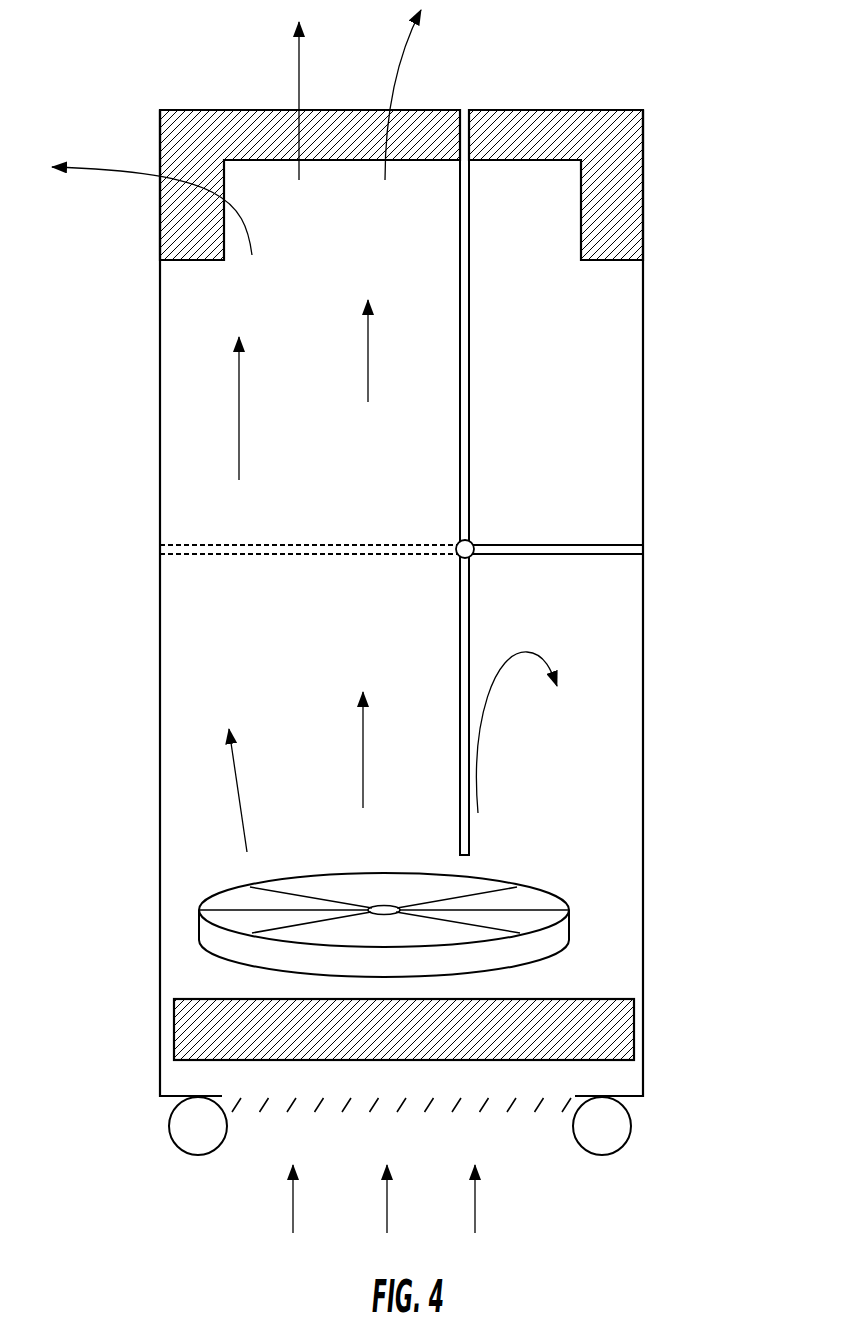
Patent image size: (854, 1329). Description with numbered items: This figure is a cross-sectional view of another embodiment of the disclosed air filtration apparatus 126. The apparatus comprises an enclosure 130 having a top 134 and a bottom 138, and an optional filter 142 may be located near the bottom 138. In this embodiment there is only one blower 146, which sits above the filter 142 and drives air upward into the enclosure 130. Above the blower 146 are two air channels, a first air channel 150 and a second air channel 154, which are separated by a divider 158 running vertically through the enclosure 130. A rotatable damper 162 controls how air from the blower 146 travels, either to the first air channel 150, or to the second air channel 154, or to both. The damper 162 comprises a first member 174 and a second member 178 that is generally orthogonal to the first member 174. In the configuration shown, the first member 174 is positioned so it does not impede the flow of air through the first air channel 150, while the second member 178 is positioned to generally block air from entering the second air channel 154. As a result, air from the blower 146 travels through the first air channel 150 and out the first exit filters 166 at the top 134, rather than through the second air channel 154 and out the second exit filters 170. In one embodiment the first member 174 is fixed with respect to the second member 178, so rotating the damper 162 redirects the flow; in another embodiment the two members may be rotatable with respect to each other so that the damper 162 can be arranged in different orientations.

The air filtration apparatus 126 is at (72, 478).
The enclosure 130 is at (645, 372).
The top 134 is at (540, 122).
The bottom 138 is at (238, 1097).
The filter 142 is at (620, 1030).
The blower 146 is at (572, 927).
The first air channel 150 is at (233, 642).
The second air channel 154 is at (573, 475).
The divider 158 is at (465, 388).
The rotatable damper 162 is at (470, 635).
The first exit filters 166 is at (270, 122).
The second exit filters 170 is at (497, 120).
The first member 174 is at (460, 607).
The second member 178 is at (602, 545).